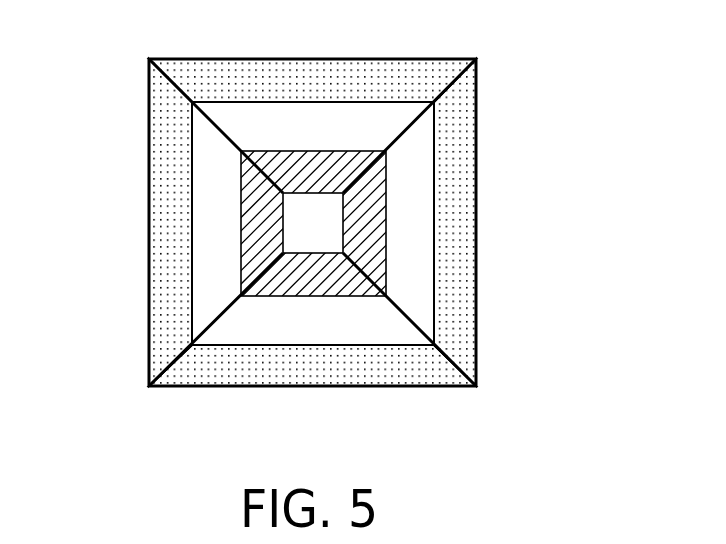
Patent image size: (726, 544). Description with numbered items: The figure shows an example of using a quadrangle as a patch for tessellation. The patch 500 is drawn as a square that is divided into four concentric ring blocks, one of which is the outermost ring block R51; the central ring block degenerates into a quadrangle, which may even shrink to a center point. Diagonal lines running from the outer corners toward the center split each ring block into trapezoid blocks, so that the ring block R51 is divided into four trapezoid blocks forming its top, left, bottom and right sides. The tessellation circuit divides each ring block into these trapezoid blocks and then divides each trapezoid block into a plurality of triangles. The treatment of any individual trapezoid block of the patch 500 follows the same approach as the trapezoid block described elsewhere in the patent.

The patch 500 is at (324, 240).
The ring block R51 is at (324, 240).